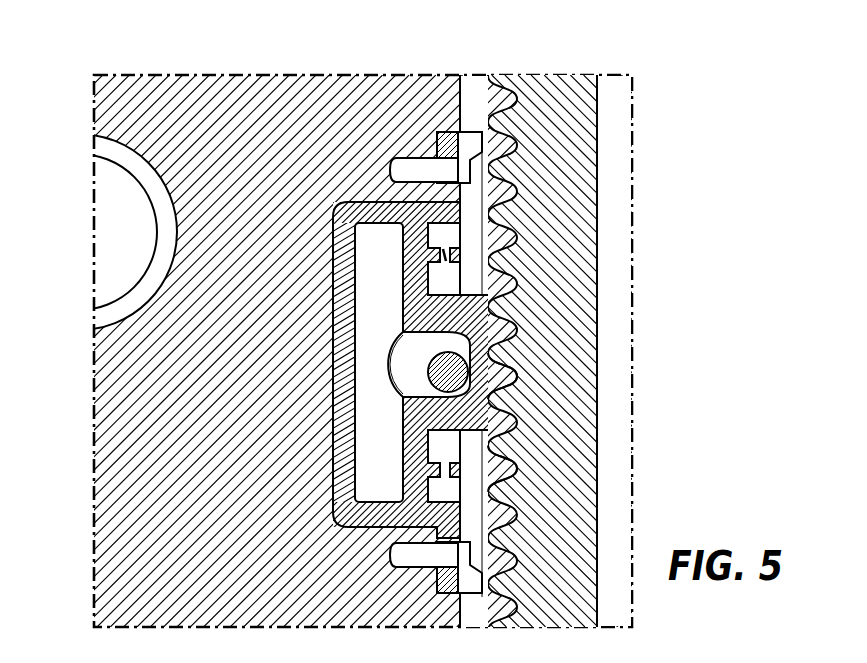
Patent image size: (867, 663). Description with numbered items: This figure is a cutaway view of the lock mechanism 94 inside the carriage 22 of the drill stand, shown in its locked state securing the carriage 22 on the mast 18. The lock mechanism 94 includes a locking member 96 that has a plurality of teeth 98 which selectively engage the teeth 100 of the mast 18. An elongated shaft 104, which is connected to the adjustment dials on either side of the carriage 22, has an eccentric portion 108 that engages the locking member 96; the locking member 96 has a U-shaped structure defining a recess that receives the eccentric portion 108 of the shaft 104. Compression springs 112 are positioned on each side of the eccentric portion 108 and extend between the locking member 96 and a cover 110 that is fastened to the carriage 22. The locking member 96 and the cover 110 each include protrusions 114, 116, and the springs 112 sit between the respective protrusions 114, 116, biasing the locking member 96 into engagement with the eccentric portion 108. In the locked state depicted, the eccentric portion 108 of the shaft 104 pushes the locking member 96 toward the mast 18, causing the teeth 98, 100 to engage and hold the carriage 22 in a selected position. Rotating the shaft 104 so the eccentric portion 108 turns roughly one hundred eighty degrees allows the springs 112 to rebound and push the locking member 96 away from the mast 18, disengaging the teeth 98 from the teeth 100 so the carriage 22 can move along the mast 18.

The mast 18 is at (590, 442).
The carriage 22 is at (138, 407).
The lock mechanism 94 is at (547, 283).
The locking member 96 is at (355, 245).
The teeth 98 is at (506, 378).
The teeth 100 is at (515, 468).
The elongated shaft 104 is at (405, 348).
The eccentric portion 108 is at (440, 374).
The cover 110 is at (488, 207).
The compression springs 112 is at (443, 247).
The protrusion 114 is at (443, 254).
The protrusion 116 is at (460, 255).